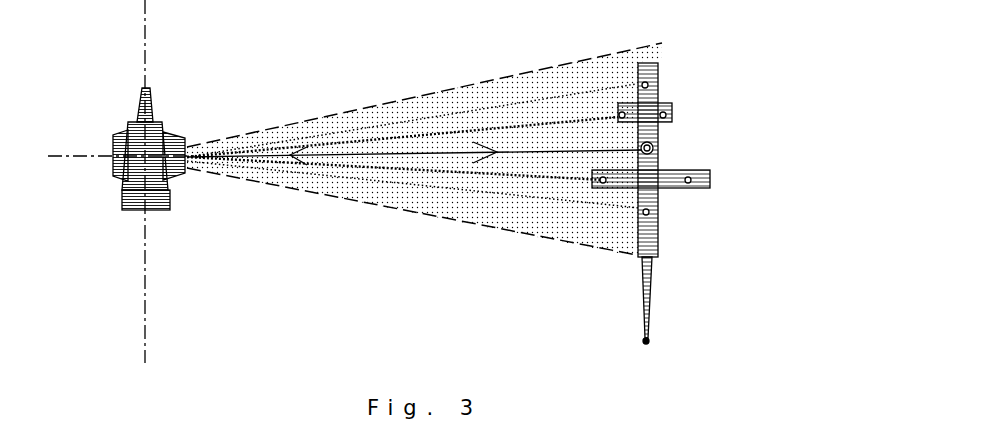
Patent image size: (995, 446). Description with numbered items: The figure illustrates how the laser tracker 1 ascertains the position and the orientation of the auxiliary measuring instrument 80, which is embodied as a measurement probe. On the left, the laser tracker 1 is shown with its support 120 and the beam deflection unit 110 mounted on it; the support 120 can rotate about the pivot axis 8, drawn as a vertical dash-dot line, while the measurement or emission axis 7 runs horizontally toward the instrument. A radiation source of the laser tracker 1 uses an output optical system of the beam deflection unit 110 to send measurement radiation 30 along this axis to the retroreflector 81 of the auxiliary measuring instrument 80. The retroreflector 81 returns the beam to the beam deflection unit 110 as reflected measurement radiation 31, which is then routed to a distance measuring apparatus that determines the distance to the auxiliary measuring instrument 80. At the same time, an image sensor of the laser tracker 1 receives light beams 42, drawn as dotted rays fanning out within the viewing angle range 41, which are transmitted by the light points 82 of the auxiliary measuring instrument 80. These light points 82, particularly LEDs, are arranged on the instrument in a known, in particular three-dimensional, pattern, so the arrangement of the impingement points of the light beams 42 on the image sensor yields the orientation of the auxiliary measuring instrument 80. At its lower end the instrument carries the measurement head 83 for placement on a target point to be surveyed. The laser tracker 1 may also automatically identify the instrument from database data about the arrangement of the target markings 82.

The laser tracker 1 is at (107, 129).
The measurement or emission axis 7 is at (120, 176).
The pivot axis 8 is at (113, 181).
The beam deflection unit 110 is at (85, 141).
The support 120 is at (101, 180).
The measurement radiation 30 is at (414, 123).
The reflected measurement radiation 31 is at (414, 153).
The viewing angle range 41 is at (424, 149).
The light beams 42 is at (515, 172).
The auxiliary measuring instrument 80 is at (675, 177).
The retroreflector 81 is at (685, 144).
The light points 82 is at (657, 148).
The measurement head 83 is at (673, 300).